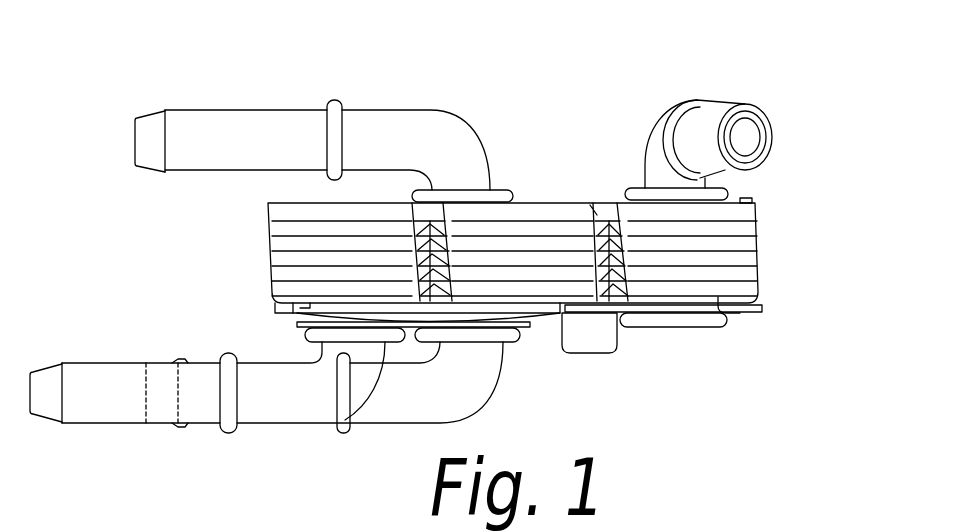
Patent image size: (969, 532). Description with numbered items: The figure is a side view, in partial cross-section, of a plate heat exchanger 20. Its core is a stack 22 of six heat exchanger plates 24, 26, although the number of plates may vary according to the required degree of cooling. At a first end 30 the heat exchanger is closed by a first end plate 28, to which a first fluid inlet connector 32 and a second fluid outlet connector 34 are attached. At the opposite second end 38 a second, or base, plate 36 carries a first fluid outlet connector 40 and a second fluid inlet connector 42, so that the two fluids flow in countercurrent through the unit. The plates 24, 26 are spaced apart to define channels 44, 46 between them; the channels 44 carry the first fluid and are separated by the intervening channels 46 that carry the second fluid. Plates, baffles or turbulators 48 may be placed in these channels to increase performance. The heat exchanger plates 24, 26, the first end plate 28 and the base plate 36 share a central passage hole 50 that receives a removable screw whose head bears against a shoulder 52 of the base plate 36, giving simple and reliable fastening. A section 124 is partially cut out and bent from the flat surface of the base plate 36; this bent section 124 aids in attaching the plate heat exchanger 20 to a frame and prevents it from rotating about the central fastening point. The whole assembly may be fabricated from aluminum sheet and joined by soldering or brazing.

The plate heat exchanger 20 is at (660, 70).
The stack 22 is at (258, 205).
The heat exchanger plate 24 is at (783, 285).
The heat exchanger plate 26 is at (758, 228).
The first end plate 28 is at (602, 208).
The first end 30 is at (790, 158).
The first fluid inlet connector 32 is at (241, 120).
The second fluid outlet connector 34 is at (707, 120).
The second end plate 36 is at (620, 243).
The second end 38 is at (775, 311).
The first fluid outlet connector 40 is at (445, 390).
The second fluid inlet connector 42 is at (123, 412).
The channel 44 is at (623, 267).
The channel 46 is at (625, 283).
The turbulator 48 is at (572, 208).
The central passage hole 50 is at (525, 200).
The shoulder 52 is at (560, 310).
The bent section 124 is at (583, 342).